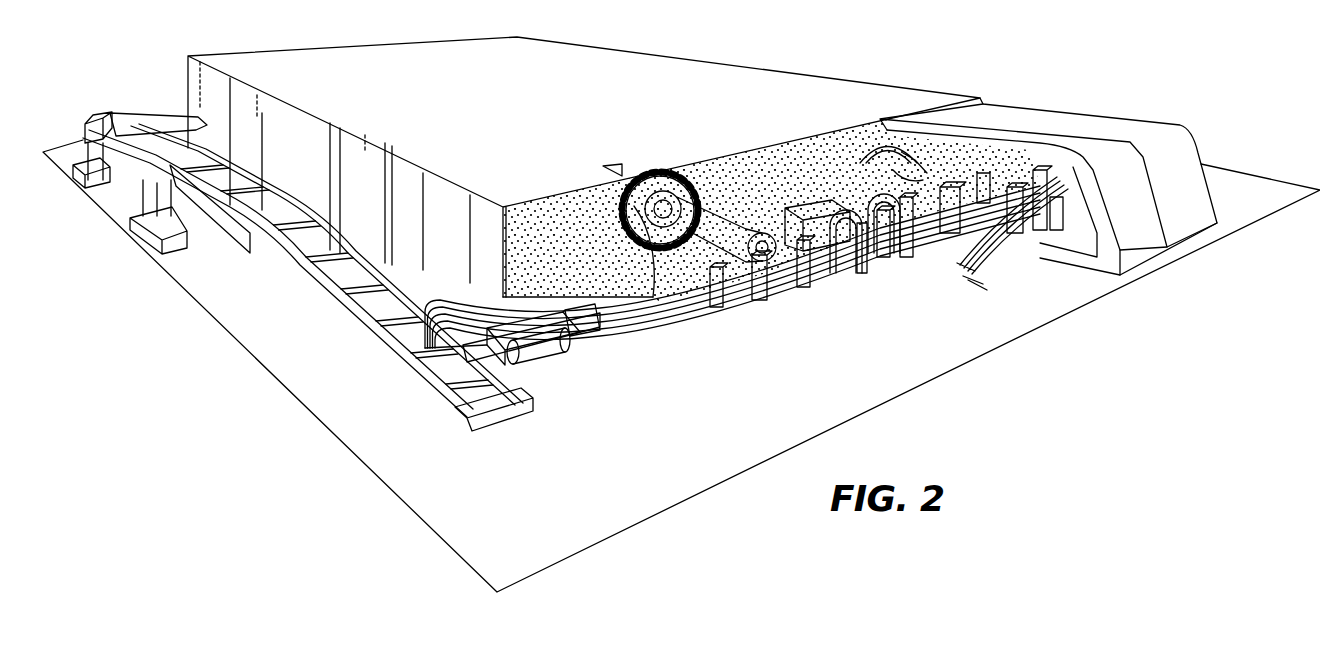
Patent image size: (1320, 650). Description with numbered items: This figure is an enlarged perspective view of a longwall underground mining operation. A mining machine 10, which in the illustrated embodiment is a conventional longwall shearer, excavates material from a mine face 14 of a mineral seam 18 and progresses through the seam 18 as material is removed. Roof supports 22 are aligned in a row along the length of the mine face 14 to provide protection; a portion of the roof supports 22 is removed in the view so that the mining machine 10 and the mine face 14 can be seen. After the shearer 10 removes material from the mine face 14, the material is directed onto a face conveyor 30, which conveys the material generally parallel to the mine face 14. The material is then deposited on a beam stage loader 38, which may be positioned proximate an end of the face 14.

The mining machine 10 is at (781, 220).
The mine face 14 is at (808, 162).
The mineral seam 18 is at (508, 107).
The roof supports 22 is at (1057, 145).
The face conveyor 30 is at (680, 290).
The beam stage loader 38 is at (367, 373).